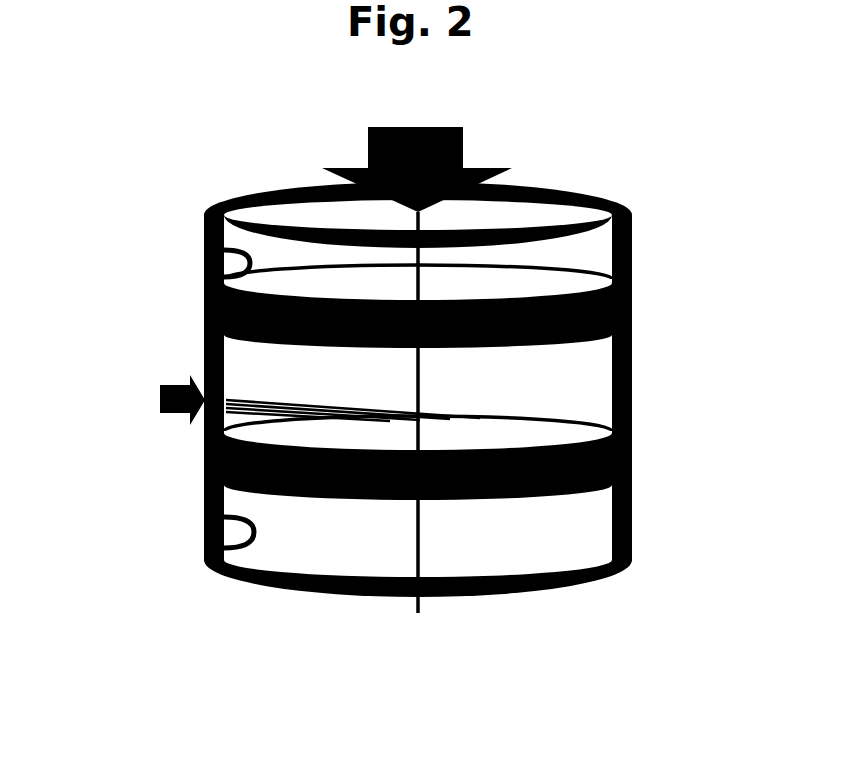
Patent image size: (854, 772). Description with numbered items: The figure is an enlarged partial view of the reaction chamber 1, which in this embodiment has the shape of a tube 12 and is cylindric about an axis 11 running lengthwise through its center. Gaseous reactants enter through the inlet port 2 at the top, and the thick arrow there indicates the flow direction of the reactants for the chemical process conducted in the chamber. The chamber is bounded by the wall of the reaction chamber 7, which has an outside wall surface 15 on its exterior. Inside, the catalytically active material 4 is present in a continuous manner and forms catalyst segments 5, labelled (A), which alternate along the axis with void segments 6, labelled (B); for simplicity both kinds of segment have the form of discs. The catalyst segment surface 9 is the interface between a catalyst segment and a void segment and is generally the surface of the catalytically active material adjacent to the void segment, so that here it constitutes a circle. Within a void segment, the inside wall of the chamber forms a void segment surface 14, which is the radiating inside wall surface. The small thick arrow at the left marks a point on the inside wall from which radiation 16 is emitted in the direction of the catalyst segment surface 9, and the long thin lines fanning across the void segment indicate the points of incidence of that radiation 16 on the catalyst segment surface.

The reaction chamber 1 is at (637, 267).
The inlet port 2 is at (527, 217).
The catalyst material 4 is at (632, 312).
The catalyst segment (A) 5 is at (206, 308).
The void segment (B) 6 is at (243, 377).
The wall of reaction chamber 7 is at (630, 567).
The catalyst segment surface 9 is at (613, 407).
The axis 11 is at (418, 606).
The tube 12 is at (502, 603).
The void segment surface 14 is at (204, 273).
The outside wall surface of the reaction chamber 15 is at (632, 363).
The radiation 16 is at (205, 428).